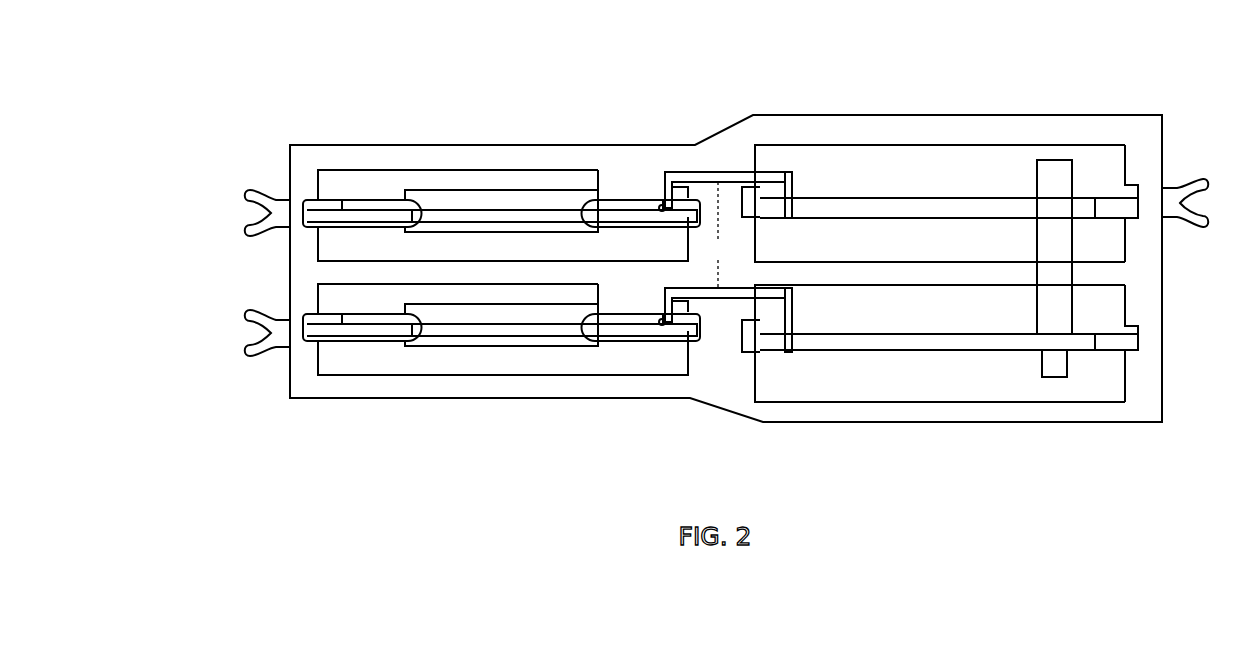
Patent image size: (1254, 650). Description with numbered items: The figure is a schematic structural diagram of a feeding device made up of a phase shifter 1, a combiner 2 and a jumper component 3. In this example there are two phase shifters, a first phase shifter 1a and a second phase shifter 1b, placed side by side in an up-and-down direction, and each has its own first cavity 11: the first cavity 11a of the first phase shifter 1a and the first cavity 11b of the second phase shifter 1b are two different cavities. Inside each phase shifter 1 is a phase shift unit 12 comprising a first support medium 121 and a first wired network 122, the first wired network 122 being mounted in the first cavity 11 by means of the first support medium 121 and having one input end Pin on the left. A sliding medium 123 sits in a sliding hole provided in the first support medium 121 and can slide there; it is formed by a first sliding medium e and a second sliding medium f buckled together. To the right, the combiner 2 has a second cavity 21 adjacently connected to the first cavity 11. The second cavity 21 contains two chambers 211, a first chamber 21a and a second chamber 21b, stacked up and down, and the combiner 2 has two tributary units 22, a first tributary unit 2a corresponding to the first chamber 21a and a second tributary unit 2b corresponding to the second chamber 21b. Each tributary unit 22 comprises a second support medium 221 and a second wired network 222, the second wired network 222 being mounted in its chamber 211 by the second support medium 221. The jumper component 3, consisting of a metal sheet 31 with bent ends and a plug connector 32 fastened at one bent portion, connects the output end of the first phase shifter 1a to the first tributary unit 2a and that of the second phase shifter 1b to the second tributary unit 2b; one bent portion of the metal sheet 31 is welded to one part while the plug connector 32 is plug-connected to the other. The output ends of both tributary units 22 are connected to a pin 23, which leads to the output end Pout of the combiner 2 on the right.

The phase shifter 1 is at (474, 262).
The first cavity 11 is at (474, 262).
The first phase shifter 1a is at (474, 144).
The first cavity of the first phase shifter 11a is at (474, 144).
The second phase shifter 1b is at (501, 391).
The first cavity of the second phase shifter 11b is at (367, 363).
The phase shift unit 12 is at (335, 150).
The first support medium 121 is at (330, 208).
The first wired network 122 is at (630, 198).
The sliding medium 123 is at (501, 148).
The first sliding medium e is at (507, 192).
The second sliding medium f is at (492, 217).
The combiner 2 is at (951, 253).
The second cavity 21 is at (951, 253).
The first tributary unit 2a is at (940, 140).
The first chamber 21a is at (978, 172).
The second tributary unit 2b is at (940, 386).
The second chamber 21b is at (922, 375).
The chamber 211 is at (1113, 243).
The tributary unit 22 is at (727, 193).
The second support medium 221 is at (768, 208).
The second wired network 222 is at (838, 197).
The pin 23 is at (1062, 182).
The jumper component 3 is at (749, 324).
The metal sheet 31 is at (718, 235).
The plug connector 32 is at (793, 218).
The input end Pin is at (257, 244).
The output end Pout is at (1200, 178).